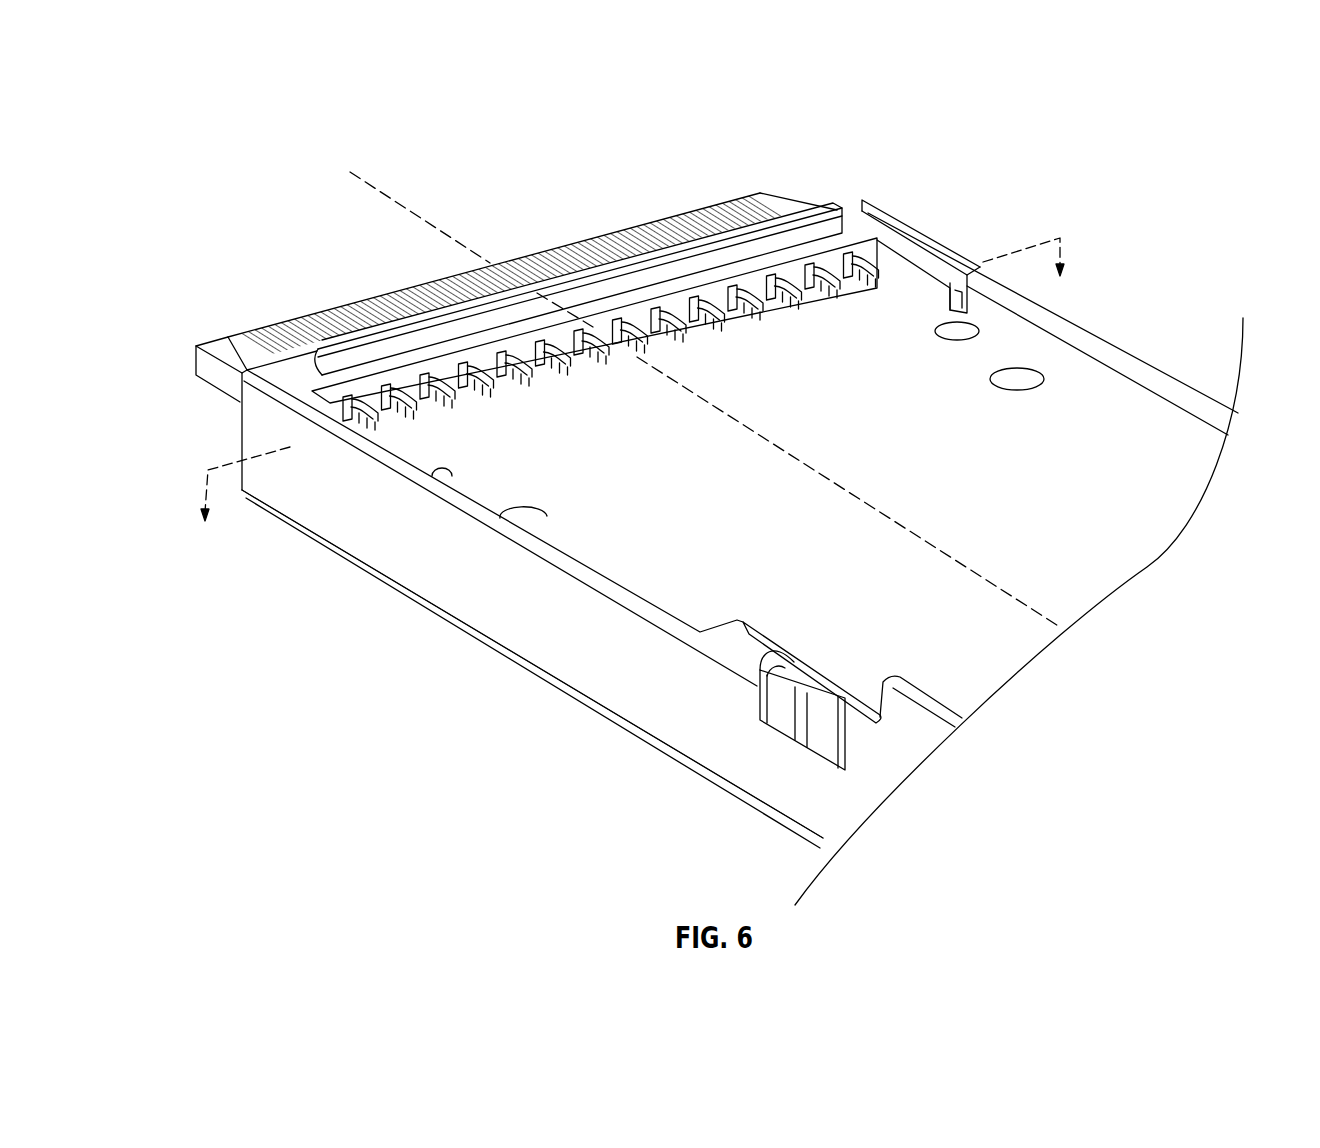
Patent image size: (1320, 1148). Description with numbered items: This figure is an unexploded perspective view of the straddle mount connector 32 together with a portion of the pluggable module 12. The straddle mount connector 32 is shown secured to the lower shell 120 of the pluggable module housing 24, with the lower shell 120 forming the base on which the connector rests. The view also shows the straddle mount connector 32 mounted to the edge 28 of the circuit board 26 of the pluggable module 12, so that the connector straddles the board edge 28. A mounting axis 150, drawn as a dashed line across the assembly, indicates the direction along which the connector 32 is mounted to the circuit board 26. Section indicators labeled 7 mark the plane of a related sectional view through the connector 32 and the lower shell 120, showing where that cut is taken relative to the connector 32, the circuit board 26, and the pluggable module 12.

The pluggable module 12 is at (982, 152).
The pluggable module housing 24 is at (552, 642).
The circuit board 26 is at (1075, 378).
The edge 28 is at (886, 283).
The straddle mount connector 32 is at (210, 322).
The lower shell 120 is at (403, 563).
The mounting axis 150 is at (408, 210).
The section view indicator 7 is at (632, 395).